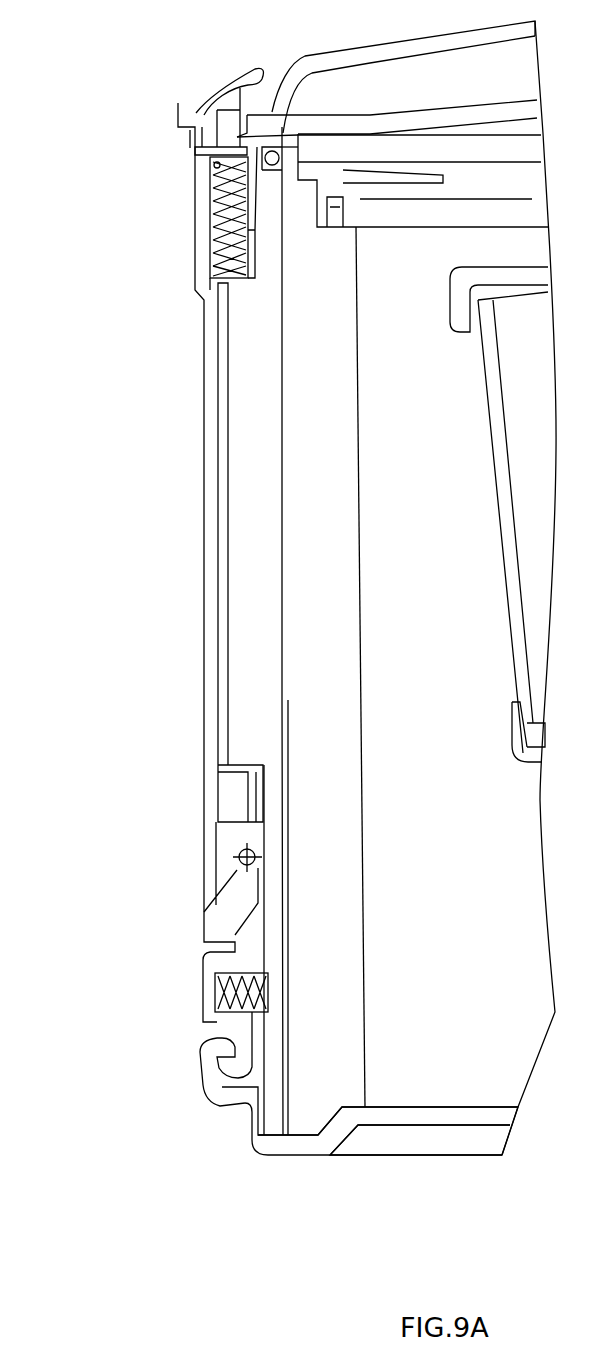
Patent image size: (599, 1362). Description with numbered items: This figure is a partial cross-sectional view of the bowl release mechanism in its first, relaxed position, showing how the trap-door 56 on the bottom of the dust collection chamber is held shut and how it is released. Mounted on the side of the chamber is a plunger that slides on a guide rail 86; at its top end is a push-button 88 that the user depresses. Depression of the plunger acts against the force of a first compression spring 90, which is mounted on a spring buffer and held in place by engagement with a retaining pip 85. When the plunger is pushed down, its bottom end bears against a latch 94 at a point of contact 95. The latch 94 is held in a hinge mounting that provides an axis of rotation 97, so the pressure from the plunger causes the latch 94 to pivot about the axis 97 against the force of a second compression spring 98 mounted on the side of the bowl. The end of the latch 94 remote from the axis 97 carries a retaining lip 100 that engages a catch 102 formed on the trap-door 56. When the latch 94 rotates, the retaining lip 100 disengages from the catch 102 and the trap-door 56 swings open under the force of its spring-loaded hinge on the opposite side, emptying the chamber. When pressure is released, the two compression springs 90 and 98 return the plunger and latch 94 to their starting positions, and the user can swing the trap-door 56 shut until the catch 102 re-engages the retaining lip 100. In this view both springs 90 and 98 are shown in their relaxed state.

The trap-door 56 is at (323, 1140).
The retaining pip 85 is at (198, 148).
The guide rail 86 is at (245, 424).
The push-button 88 is at (188, 100).
The first compression spring 90 is at (210, 231).
The latch 94 is at (214, 994).
The point of contact 95 is at (203, 910).
The axis of rotation 97 is at (242, 860).
The second compression spring 98 is at (224, 1014).
The retaining lip 100 is at (237, 1066).
The catch 102 is at (242, 1099).